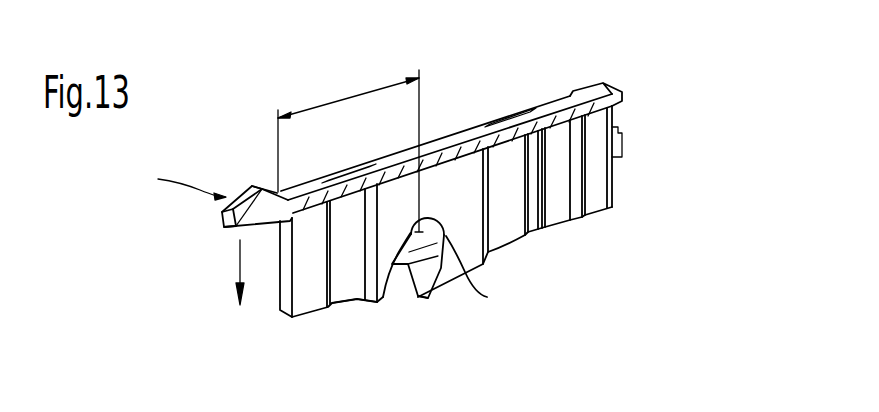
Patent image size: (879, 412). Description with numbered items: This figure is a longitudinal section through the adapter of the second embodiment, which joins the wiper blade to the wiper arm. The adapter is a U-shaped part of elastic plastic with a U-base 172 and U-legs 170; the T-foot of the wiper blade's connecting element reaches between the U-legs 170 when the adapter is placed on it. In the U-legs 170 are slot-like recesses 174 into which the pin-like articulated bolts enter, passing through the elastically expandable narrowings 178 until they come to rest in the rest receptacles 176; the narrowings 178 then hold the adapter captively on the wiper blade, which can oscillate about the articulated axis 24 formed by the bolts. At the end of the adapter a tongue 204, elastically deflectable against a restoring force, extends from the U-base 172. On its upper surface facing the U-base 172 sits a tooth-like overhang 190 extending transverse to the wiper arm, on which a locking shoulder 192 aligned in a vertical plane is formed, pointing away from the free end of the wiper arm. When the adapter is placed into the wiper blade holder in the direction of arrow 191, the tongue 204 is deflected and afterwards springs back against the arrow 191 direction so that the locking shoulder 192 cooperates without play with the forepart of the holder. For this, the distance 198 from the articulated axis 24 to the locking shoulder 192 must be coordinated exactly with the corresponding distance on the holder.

The articulated axis 24 is at (368, 298).
The U-legs 170 is at (600, 189).
The U-base 172 is at (605, 88).
The slot-like recesses 174 is at (395, 293).
The rest receptacles 176 is at (487, 297).
The narrowings 178 is at (435, 300).
The tooth-like overhang 190 is at (256, 184).
The arrow 191 is at (240, 259).
The locking shoulder 192 is at (284, 186).
The distance 198 is at (345, 98).
The tongue 204 is at (171, 181).